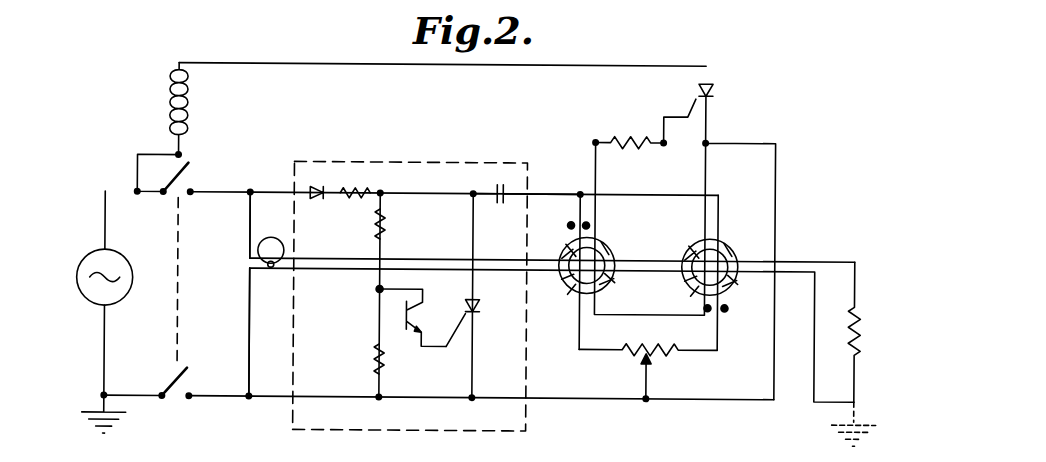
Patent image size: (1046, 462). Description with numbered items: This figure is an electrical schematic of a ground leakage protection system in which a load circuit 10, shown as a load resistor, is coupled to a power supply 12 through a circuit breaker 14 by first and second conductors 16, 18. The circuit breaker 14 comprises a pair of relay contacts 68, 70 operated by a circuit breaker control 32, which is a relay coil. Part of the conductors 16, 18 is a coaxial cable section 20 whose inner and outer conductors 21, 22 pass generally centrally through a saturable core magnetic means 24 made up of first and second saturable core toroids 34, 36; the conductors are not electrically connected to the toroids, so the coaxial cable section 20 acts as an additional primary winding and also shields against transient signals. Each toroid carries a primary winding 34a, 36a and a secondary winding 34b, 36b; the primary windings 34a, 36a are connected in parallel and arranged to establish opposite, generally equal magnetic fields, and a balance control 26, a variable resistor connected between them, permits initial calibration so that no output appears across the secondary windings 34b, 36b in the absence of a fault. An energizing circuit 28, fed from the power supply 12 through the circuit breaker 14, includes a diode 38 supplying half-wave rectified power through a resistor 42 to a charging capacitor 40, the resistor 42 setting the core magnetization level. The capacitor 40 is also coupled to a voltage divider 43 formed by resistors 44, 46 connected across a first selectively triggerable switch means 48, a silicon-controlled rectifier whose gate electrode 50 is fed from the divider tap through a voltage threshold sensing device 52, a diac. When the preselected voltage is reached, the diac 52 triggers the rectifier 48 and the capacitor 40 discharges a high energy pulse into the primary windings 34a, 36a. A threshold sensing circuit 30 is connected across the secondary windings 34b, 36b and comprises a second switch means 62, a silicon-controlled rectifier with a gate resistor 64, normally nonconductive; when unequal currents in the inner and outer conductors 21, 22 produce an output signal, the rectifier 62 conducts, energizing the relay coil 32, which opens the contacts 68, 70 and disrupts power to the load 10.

The load circuit 10 is at (862, 328).
The power supply 12 is at (83, 262).
The circuit breaker means 14 is at (175, 255).
The first conductor 16 is at (246, 228).
The second conductor 18 is at (246, 303).
The coaxial cable section 20 is at (270, 240).
The inner conductor 21 is at (655, 260).
The outer conductor 22 is at (654, 275).
The saturable core magnetic means 24 is at (679, 309).
The balance control means 26 is at (627, 354).
The energizing circuit 28 is at (380, 162).
The threshold sensing circuit 30 is at (660, 183).
The circuit breaker control 32 is at (169, 123).
The first saturable core toroid 34 is at (566, 248).
The primary winding 34a is at (578, 294).
The secondary winding 34b is at (604, 246).
The second saturable core toroid 36 is at (732, 246).
The primary winding 36a is at (728, 294).
The secondary winding 36b is at (700, 246).
The diode 38 is at (316, 202).
The charging capacitor 40 is at (497, 204).
The resistor 42 is at (355, 202).
The voltage divider 43 is at (376, 285).
The resistor 44 is at (384, 227).
The resistor 46 is at (374, 348).
The first selectively triggerable switch means 48 is at (478, 305).
The control electrode 50 is at (458, 342).
The voltage threshold sensing device 52 is at (404, 328).
The second selectively energizable switch means 62 is at (713, 88).
The gate resistor 64 is at (629, 140).
The relay contact 68 is at (194, 177).
The relay contact 70 is at (190, 384).